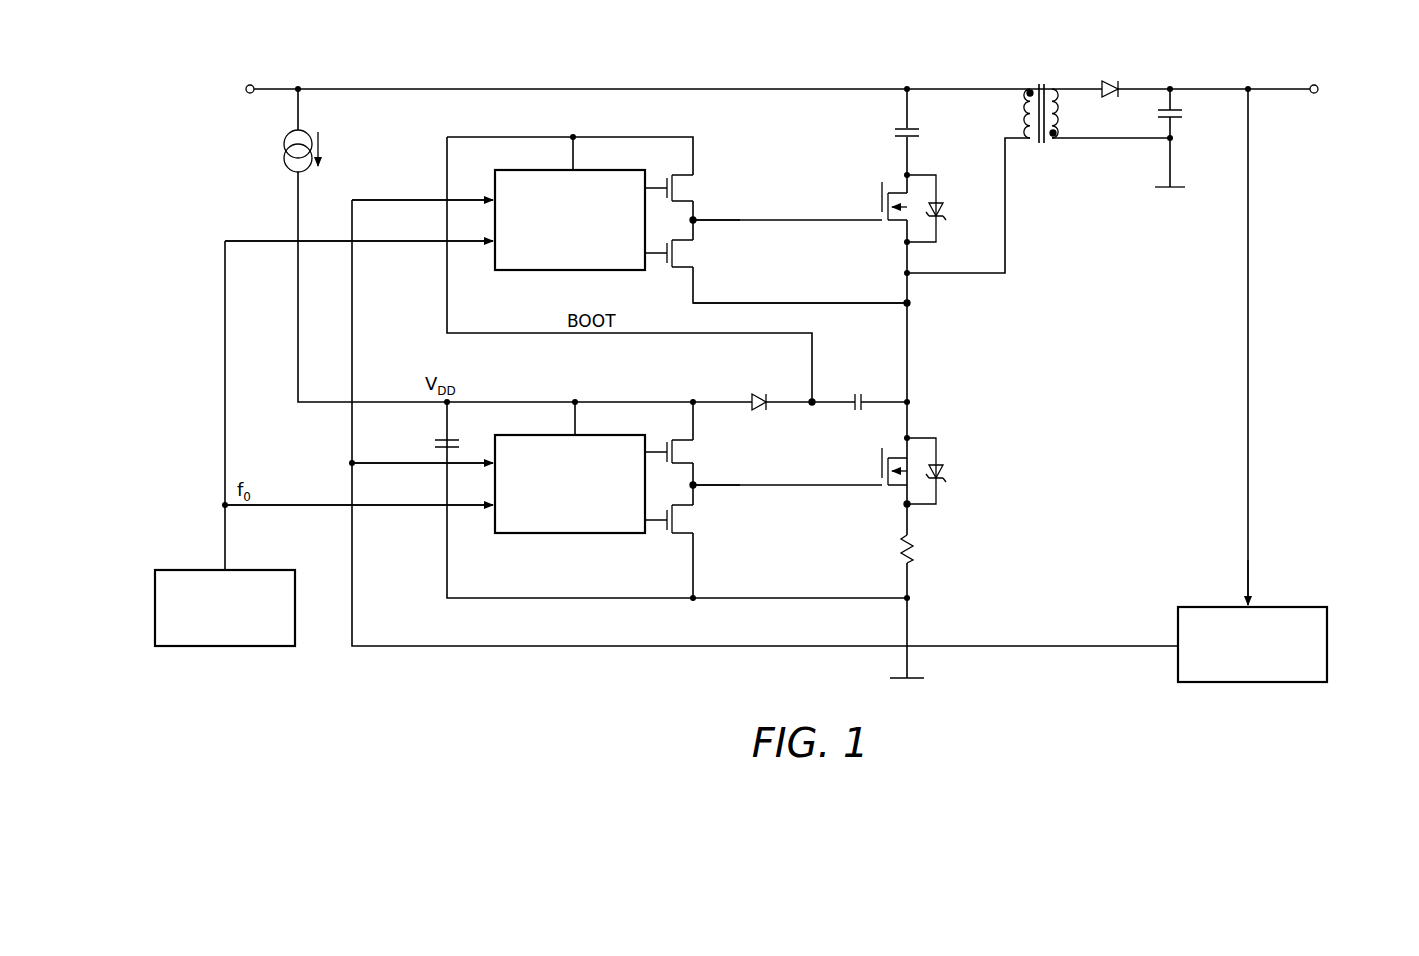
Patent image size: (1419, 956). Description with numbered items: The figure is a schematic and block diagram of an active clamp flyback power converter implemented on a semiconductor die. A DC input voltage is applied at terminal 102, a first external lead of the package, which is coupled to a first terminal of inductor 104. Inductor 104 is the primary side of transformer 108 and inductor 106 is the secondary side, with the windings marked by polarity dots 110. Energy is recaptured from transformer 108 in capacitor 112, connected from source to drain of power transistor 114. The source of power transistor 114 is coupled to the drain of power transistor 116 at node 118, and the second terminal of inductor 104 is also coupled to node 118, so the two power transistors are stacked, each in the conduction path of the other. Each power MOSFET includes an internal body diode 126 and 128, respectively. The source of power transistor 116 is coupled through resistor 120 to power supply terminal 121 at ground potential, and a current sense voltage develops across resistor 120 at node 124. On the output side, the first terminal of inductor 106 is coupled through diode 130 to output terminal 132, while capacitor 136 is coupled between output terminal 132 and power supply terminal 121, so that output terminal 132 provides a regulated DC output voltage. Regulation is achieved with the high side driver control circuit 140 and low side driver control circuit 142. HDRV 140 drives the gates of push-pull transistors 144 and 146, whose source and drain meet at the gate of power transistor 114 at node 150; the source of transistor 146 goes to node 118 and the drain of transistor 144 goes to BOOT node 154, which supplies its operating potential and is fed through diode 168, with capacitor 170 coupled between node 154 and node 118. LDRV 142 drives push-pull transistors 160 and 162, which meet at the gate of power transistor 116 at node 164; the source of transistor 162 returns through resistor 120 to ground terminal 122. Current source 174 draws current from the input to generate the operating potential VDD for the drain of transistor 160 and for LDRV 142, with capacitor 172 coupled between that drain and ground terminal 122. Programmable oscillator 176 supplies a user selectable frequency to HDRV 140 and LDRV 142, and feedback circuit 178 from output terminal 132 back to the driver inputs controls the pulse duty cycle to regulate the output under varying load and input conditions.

The terminal 102 is at (249, 84).
The inductor 104 is at (1030, 86).
The inductor 106 is at (1052, 86).
The transformer 108 is at (1043, 142).
The polarity dots 110 is at (1028, 94).
The capacitor 112 is at (895, 132).
The power transistor 114 is at (878, 207).
The power transistor 116 is at (878, 470).
The node 118 is at (911, 305).
The resistor 120 is at (913, 553).
The power supply terminal 121 is at (1180, 190).
The ground terminal 122 is at (918, 680).
The node 124 is at (905, 506).
The internal body diode 126 is at (940, 212).
The internal body diode 128 is at (940, 474).
The diode 130 is at (1112, 82).
The output terminal 132 is at (1318, 85).
The capacitor 136 is at (1184, 113).
The high side driver (HDRV) control circuit 140 is at (570, 271).
The low side driver (LDRV) control circuit 142 is at (570, 534).
The push-pull transistor 144 is at (683, 190).
The push-pull transistor 146 is at (683, 255).
The node 150 is at (697, 220).
The BOOT node 154 is at (811, 408).
The push-pull transistor 160 is at (683, 452).
The push-pull transistor 162 is at (683, 520).
The node 164 is at (697, 485).
The diode 168 is at (760, 396).
The capacitor 170 is at (856, 395).
The capacitor 172 is at (440, 443).
The current source 174 is at (290, 152).
The programmable oscillator 176 is at (192, 570).
The feedback circuit 178 is at (1328, 645).